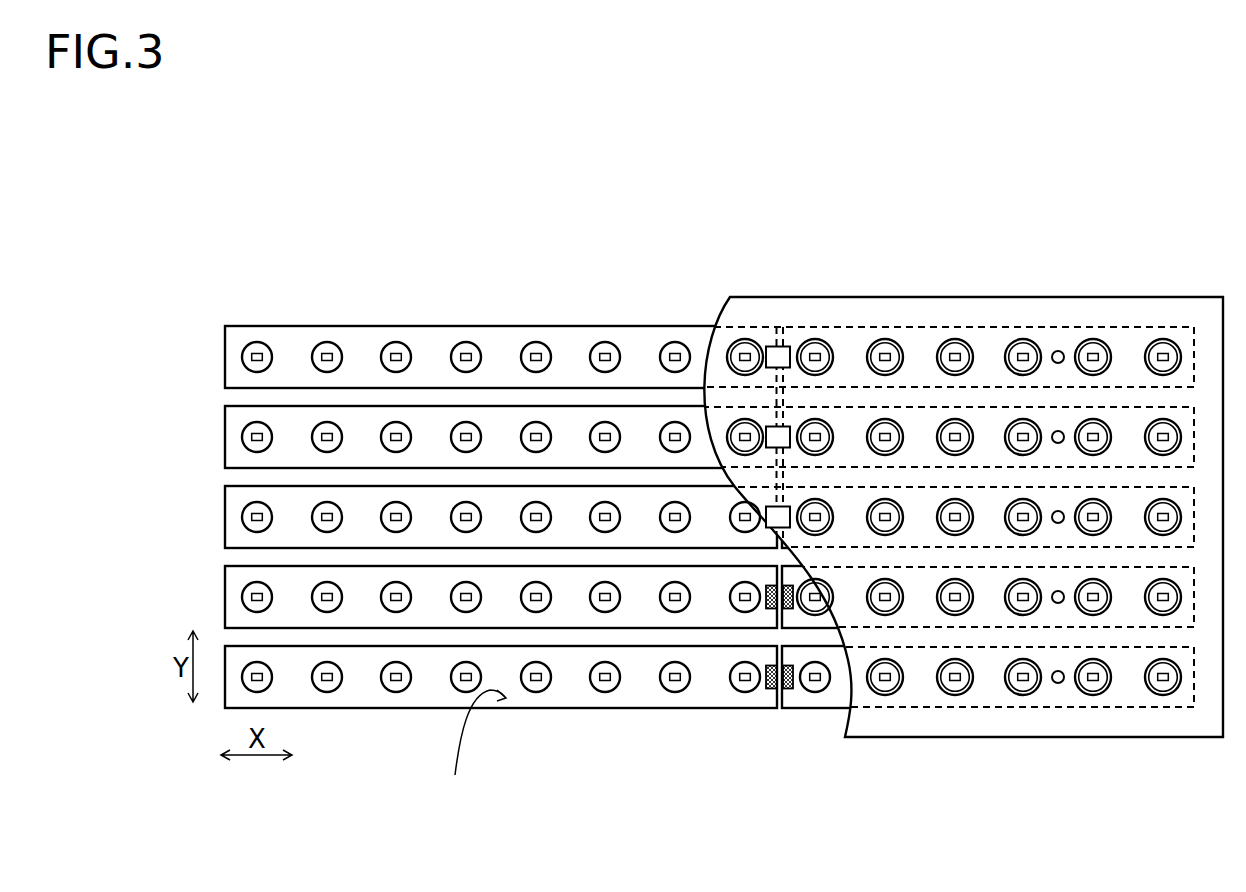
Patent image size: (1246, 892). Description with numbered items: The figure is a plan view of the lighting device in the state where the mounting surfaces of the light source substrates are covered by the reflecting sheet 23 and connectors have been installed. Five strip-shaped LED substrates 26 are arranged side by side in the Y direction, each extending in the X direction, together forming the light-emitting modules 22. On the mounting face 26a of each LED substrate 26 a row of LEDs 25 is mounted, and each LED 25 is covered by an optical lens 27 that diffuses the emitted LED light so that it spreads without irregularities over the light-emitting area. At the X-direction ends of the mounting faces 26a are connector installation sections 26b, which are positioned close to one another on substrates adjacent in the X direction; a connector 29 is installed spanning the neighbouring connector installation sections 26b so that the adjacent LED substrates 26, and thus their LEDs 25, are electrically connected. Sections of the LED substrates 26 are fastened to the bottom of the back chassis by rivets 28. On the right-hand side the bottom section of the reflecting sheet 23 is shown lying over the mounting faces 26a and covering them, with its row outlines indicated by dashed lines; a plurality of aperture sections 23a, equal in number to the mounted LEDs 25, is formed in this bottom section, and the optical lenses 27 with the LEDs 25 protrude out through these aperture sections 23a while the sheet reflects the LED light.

The light-emitting module 22 is at (663, 806).
The reflecting sheet 23 is at (1205, 737).
The aperture section 23a is at (1147, 687).
The LED 25 is at (605, 683).
The LED substrate 26 is at (573, 708).
The mounting face 26a is at (472, 749).
The connector installation section 26b is at (770, 708).
The optical lens 27 is at (612, 688).
The rivet 28 is at (1058, 351).
The connector 29 is at (767, 347).